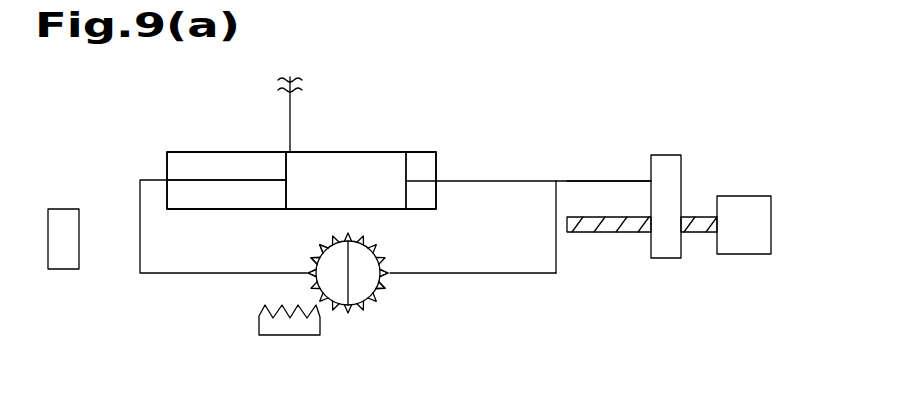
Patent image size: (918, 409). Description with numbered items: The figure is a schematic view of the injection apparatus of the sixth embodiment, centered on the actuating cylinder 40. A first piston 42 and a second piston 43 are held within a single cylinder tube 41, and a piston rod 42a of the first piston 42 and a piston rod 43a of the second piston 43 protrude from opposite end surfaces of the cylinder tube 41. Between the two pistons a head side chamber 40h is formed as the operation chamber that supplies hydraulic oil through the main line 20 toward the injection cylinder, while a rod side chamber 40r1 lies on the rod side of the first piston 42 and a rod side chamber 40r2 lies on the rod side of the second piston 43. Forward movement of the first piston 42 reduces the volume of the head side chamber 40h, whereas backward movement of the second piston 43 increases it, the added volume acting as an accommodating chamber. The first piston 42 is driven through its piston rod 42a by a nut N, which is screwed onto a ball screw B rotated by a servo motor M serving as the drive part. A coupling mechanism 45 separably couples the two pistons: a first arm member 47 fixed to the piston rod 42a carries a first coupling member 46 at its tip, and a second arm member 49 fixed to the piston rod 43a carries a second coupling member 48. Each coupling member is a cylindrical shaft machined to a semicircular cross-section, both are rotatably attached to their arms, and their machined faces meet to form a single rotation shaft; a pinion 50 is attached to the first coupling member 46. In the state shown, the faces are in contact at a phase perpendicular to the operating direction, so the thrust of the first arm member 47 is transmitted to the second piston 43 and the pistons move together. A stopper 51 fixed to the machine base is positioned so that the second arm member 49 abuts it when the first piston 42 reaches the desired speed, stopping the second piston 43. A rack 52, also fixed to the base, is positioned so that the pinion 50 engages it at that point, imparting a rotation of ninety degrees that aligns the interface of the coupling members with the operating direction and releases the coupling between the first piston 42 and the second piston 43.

The main line 20 is at (292, 98).
The actuating cylinder 40 is at (406, 104).
The head side chamber 40h is at (359, 162).
The rod side chamber 40r1 is at (428, 158).
The rod side chamber 40r2 is at (207, 209).
The cylinder tube 41 is at (238, 152).
The first piston 42 is at (409, 196).
The piston rod 42a is at (608, 181).
The second piston 43 is at (285, 168).
The piston rod 43a is at (193, 180).
The coupling mechanism 45 is at (497, 316).
The first coupling member 46 is at (359, 295).
The first arm member 47 is at (525, 273).
The second coupling member 48 is at (312, 266).
The second arm member 49 is at (157, 275).
The pinion 50 is at (386, 288).
The stopper 51 is at (62, 209).
The rack 52 is at (290, 337).
The ball screw B is at (598, 233).
The nut N is at (664, 155).
The servo motor M is at (744, 196).